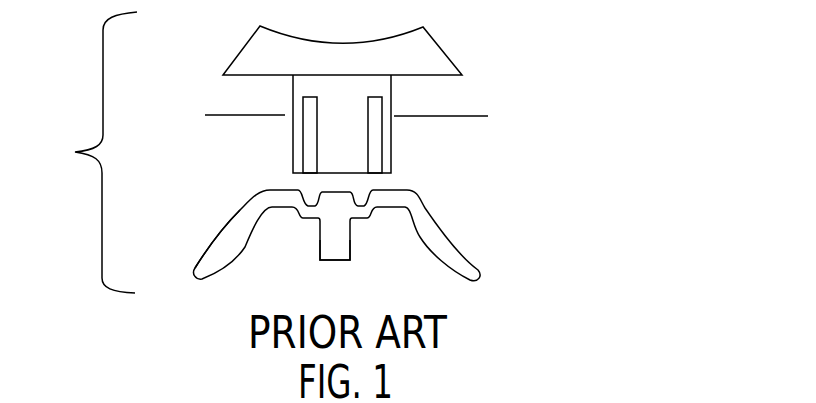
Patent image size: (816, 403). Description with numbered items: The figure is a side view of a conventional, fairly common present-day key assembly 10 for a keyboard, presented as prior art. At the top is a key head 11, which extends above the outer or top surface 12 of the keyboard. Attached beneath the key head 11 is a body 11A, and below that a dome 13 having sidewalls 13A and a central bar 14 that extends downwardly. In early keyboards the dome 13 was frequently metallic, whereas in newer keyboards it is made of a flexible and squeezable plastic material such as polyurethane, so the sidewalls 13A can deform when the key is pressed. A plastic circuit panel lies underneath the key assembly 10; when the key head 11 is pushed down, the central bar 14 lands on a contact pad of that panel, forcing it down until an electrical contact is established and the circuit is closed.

The key assembly 10 is at (73, 152).
The key head 11 is at (432, 53).
The body 11A is at (295, 147).
The outer or top surface 12 is at (465, 116).
The dome 13 is at (440, 225).
The sidewalls 13A is at (217, 263).
The central bar 14 is at (340, 253).